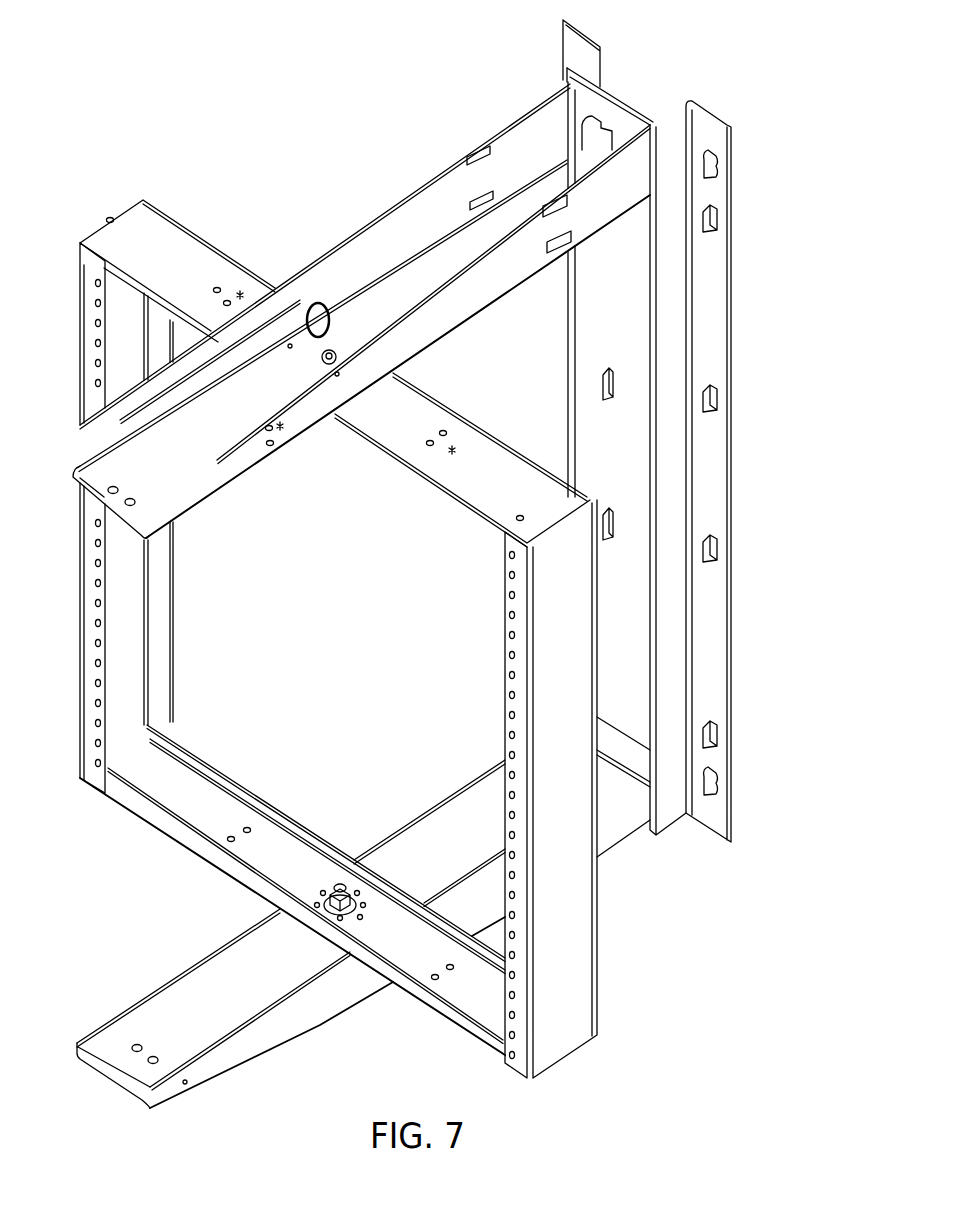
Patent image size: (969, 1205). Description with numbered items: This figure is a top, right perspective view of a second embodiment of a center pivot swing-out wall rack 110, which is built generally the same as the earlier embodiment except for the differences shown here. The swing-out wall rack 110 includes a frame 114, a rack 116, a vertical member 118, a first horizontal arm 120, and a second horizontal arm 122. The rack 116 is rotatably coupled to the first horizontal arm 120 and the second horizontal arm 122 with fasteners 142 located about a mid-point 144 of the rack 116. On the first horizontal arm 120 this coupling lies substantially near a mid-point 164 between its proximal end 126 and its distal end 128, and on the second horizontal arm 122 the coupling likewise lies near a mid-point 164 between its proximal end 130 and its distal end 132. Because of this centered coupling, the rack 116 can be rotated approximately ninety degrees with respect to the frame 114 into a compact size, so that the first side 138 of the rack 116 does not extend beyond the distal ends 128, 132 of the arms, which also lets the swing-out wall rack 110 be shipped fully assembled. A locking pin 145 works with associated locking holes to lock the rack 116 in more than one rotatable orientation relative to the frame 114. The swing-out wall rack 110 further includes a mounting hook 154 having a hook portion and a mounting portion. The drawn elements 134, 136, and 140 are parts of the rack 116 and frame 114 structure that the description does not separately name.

The swing-out wall rack 110 is at (85, 181).
The frame 114 is at (740, 525).
The rack 116 is at (62, 742).
The vertical member 118 is at (600, 336).
The first horizontal arm 120 is at (443, 198).
The second horizontal arm 122 is at (298, 1018).
The proximal end 126 is at (540, 178).
The distal end 128 is at (185, 456).
The proximal end 130 is at (613, 748).
The distal end 132 is at (178, 1001).
The top corner plate 134 is at (163, 243).
The bottom rail 136 is at (180, 788).
The first side 138 is at (555, 703).
The left post 140 is at (80, 597).
The fasteners 142 is at (335, 345).
The mid-point 144 is at (338, 372).
The locking pin 145 is at (321, 302).
The mounting hook 154 is at (618, 83).
The mid-point 164 is at (290, 343).